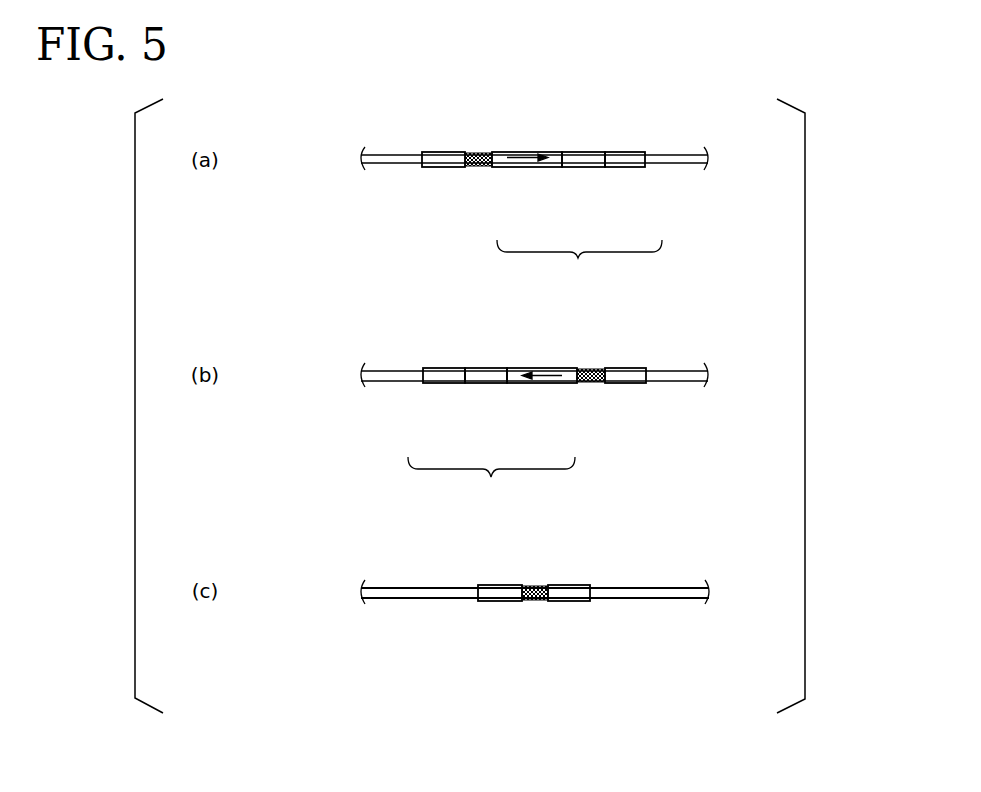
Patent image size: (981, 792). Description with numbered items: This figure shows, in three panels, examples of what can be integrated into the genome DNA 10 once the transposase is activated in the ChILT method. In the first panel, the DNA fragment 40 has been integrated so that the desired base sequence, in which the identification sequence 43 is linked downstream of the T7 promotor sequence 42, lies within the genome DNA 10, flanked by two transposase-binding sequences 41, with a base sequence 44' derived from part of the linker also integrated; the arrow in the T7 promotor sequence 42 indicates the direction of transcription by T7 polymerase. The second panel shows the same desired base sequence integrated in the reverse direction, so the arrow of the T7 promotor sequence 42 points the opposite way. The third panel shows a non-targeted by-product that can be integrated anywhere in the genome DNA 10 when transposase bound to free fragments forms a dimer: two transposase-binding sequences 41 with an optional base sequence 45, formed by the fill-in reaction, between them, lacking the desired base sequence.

The genome DNA 10 is at (678, 165).
The DNA fragment 40 is at (535, 377).
The transposase-binding sequence 41 is at (443, 167).
The T7 promotor sequence 42 is at (528, 168).
The identification sequence 43 is at (583, 168).
The base sequence derived from part of the linker 44' is at (534, 316).
The optional base sequence 45 is at (537, 601).